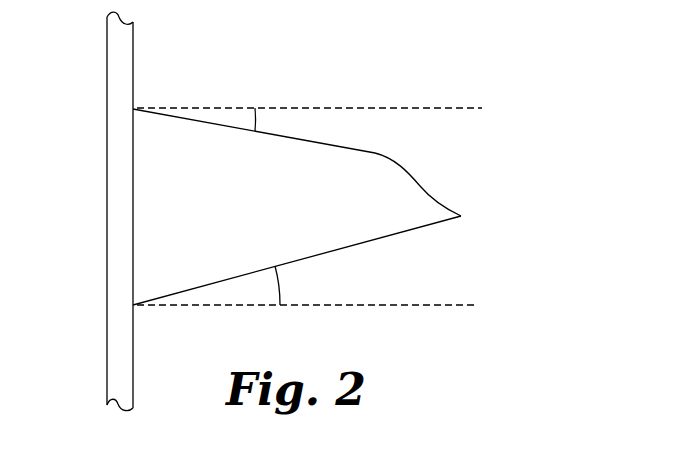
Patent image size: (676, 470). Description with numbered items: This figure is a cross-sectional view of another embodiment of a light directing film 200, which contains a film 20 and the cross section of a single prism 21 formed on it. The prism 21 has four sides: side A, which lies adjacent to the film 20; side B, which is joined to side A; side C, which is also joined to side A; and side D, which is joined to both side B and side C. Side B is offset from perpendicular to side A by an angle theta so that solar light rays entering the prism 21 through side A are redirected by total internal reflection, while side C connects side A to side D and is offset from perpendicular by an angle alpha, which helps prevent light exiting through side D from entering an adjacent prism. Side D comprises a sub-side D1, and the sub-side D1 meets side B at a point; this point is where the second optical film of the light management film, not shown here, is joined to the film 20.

The light directing film 200 is at (357, 67).
The film 20 is at (117, 50).
The prism 21 is at (150, 254).
The side A is at (133, 204).
The side B is at (402, 235).
The side C is at (205, 122).
The side D is at (380, 155).
The sub-side D1 is at (449, 207).